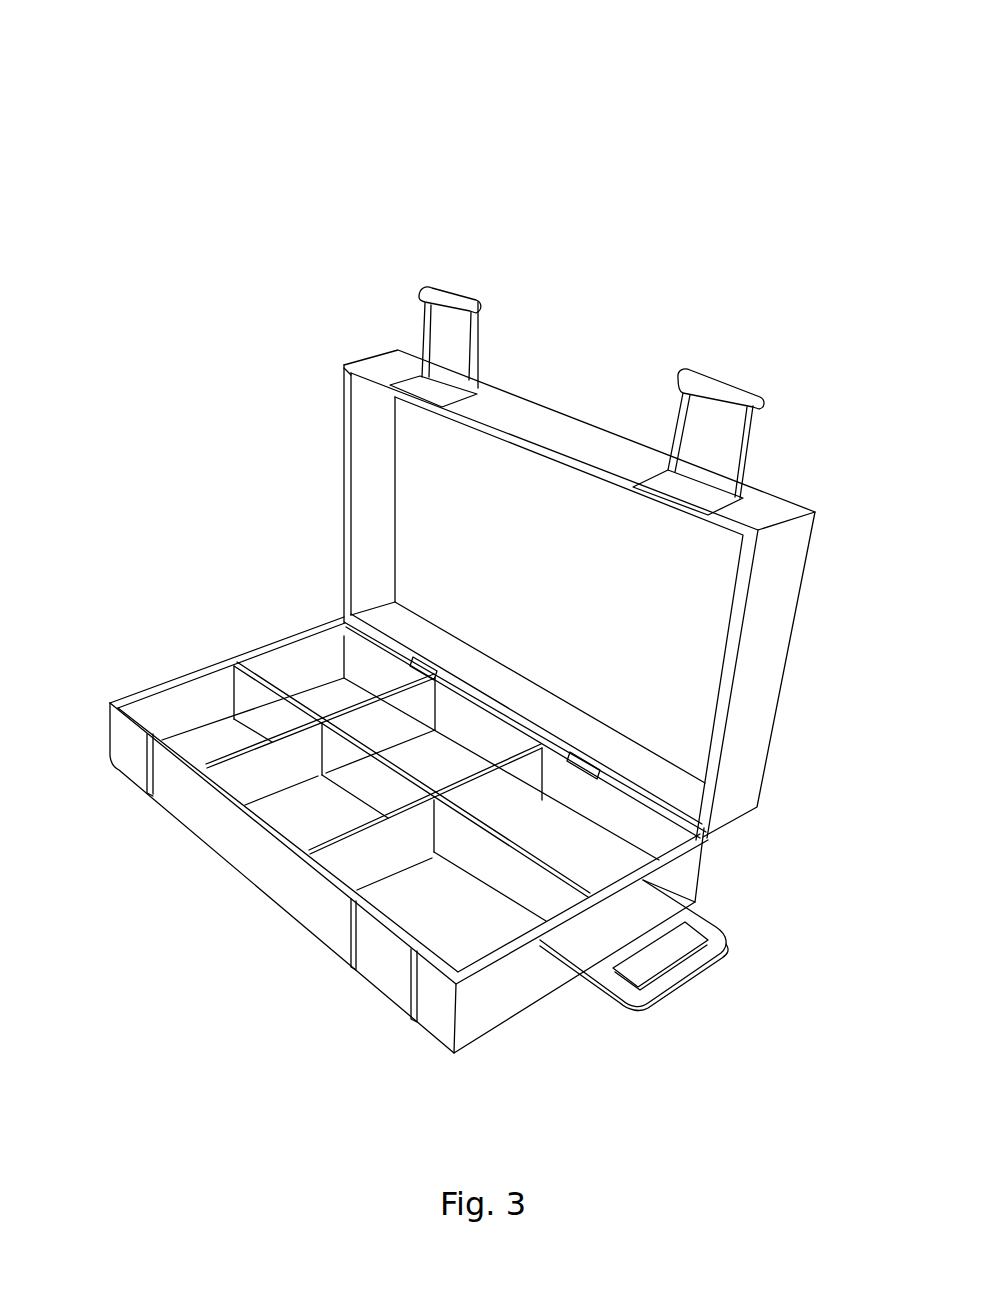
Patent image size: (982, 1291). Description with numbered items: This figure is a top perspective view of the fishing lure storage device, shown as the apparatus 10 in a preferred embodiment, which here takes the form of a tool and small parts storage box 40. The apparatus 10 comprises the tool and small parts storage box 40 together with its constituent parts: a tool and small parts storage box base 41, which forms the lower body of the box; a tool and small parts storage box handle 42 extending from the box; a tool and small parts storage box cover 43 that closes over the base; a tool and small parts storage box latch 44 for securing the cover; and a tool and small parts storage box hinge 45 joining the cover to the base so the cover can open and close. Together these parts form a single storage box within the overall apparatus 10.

The apparatus 10 is at (805, 115).
The tool and small parts storage box 40 is at (124, 794).
The tool and small parts storage box base 41 is at (333, 951).
The tool and small parts storage box handle 42 is at (706, 963).
The tool and small parts storage box cover 43 is at (780, 692).
The tool and small parts storage box latch 44 is at (468, 312).
The tool and small parts storage box hinge 45 is at (414, 667).